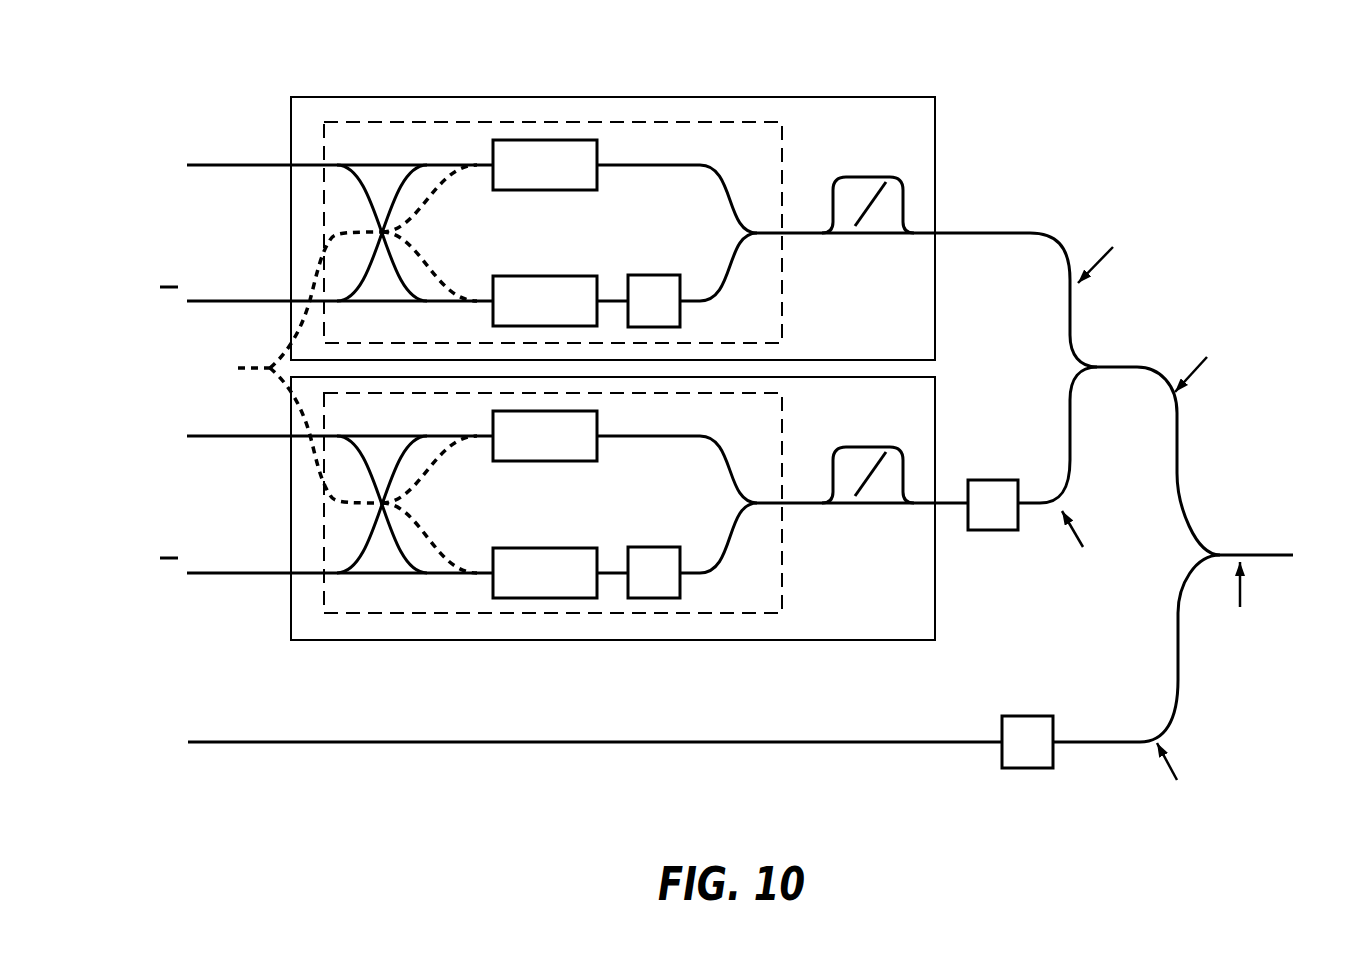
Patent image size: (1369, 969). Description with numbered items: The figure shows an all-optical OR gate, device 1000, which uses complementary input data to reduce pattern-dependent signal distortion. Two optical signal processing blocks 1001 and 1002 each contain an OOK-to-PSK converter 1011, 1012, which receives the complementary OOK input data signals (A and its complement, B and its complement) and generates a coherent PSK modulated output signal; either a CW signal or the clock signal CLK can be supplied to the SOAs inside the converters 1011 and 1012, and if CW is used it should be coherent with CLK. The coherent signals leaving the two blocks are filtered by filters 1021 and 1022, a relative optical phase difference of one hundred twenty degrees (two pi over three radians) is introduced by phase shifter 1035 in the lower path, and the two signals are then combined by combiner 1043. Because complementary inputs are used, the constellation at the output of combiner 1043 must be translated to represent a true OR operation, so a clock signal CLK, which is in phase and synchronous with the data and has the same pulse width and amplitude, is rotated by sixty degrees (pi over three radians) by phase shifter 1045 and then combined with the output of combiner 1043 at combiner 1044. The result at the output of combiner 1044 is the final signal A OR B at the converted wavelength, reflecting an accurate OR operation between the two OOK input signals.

The all-optical OR gate device 1000 is at (1253, 87).
The optical signal processing block 1001 is at (518, 97).
The optical signal processing block 1002 is at (520, 640).
The OOK-to-PSK converter 1011 is at (781, 121).
The OOK-to-PSK converter 1012 is at (773, 614).
The filter 1021 is at (870, 177).
The filter 1022 is at (870, 447).
The phase shifter 1035 is at (993, 531).
The combiner 1043 is at (1080, 368).
The combiner 1044 is at (1222, 548).
The phase shifter 1045 is at (1030, 768).